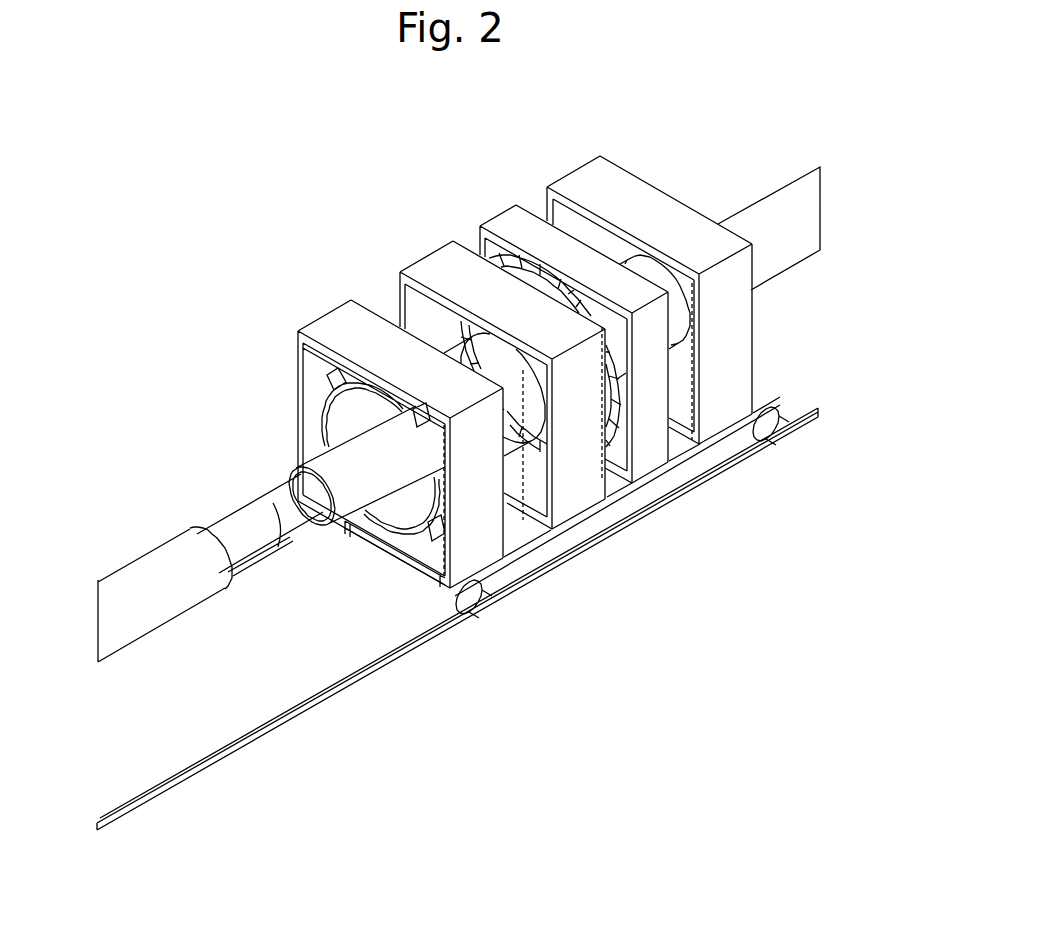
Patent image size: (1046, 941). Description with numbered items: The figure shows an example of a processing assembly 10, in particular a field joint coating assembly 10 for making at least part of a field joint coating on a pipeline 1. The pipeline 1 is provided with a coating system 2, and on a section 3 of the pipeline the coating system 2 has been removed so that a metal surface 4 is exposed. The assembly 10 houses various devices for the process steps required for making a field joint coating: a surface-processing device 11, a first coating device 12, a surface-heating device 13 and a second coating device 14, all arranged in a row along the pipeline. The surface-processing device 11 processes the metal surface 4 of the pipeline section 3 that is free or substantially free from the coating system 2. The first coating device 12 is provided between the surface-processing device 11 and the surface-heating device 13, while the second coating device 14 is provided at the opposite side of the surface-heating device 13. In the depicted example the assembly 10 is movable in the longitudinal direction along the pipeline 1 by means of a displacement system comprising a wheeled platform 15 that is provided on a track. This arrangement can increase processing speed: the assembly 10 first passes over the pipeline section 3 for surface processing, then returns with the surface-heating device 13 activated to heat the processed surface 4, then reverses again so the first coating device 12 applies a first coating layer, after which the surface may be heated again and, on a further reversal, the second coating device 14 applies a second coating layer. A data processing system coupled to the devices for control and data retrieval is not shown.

The pipeline 1 is at (101, 178).
The coating system 2 is at (130, 628).
The section of the pipeline 3 is at (247, 455).
The metal surface 4 is at (235, 526).
The field joint coating assembly 10 is at (434, 196).
The surface-processing device 11 is at (327, 330).
The first coating device 12 is at (446, 270).
The surface-heating device 13 is at (518, 213).
The second coating device 14 is at (592, 180).
The wheeled platform 15 is at (758, 403).